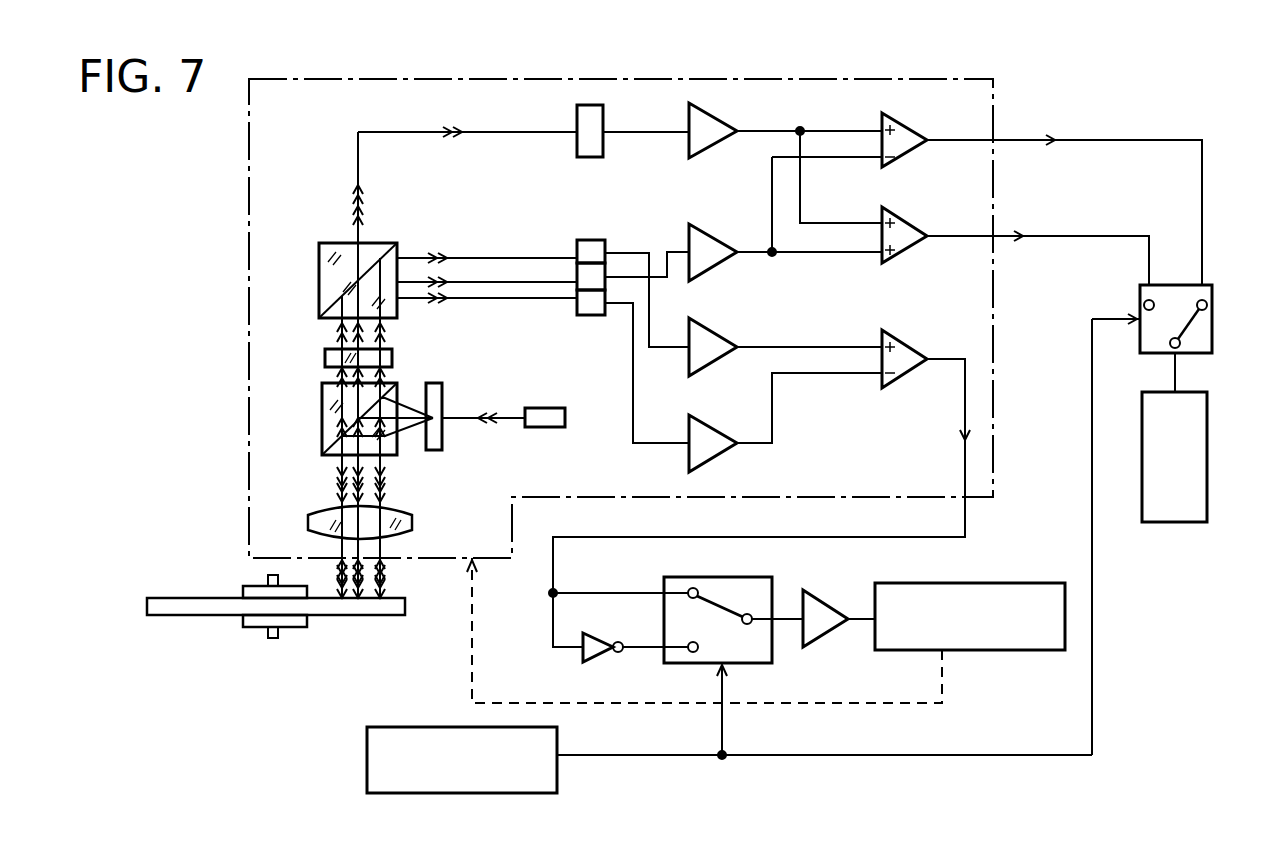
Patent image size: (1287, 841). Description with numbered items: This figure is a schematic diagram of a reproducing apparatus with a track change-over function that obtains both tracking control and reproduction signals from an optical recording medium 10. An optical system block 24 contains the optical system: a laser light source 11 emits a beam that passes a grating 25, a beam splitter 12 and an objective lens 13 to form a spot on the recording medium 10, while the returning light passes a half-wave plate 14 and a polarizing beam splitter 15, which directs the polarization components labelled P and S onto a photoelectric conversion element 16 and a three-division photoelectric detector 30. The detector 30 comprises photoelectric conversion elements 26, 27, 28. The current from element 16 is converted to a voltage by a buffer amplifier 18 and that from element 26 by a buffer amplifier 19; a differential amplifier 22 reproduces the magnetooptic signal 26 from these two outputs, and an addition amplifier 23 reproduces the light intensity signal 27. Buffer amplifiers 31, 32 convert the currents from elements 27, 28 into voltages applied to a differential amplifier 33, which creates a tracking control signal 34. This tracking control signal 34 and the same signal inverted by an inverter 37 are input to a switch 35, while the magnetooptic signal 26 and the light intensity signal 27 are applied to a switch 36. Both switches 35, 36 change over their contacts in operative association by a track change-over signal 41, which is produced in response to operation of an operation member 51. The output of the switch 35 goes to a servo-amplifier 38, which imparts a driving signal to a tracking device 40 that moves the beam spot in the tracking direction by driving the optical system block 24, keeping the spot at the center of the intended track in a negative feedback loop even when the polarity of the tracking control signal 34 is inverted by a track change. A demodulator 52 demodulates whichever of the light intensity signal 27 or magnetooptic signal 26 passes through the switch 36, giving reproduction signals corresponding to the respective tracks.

The optical recording medium 10 is at (184, 598).
The laser light source 11 is at (545, 408).
The beam splitter 12 is at (322, 418).
The objective lens 13 is at (332, 508).
The λ/2 plate 14 is at (325, 361).
The polarizing beam splitter 15 is at (319, 286).
The photoelectric conversion element 16 is at (577, 108).
The buffer amplifier 18 is at (705, 112).
The buffer amplifier 19 is at (706, 230).
The differential amplifier 22 is at (896, 124).
The addition amplifier 23 is at (896, 219).
The optical system block 24 is at (249, 215).
The grating 25 is at (434, 383).
The photoelectric conversion element / magnetooptic signal 26 is at (600, 273).
The photoelectric conversion element / light intensity signal 27 is at (595, 246).
The photoelectric conversion element 28 is at (597, 316).
The three-division photoelectric detector 30 is at (578, 235).
The buffer amplifier 31 is at (705, 328).
The buffer amplifier 32 is at (705, 428).
The differential amplifier 33 is at (897, 336).
The tracking control signal 34 is at (962, 426).
The switch 35 is at (716, 577).
The switch 36 is at (1212, 311).
The inverter 37 is at (600, 658).
The servo-amplifier 38 is at (818, 594).
The tracking device 40 is at (997, 583).
The track change-over signal 41 is at (653, 758).
The operation member 51 is at (415, 727).
The demodulator 52 is at (1207, 455).
The P-polarized light beam P is at (360, 214).
The S-polarized light beam S is at (492, 280).